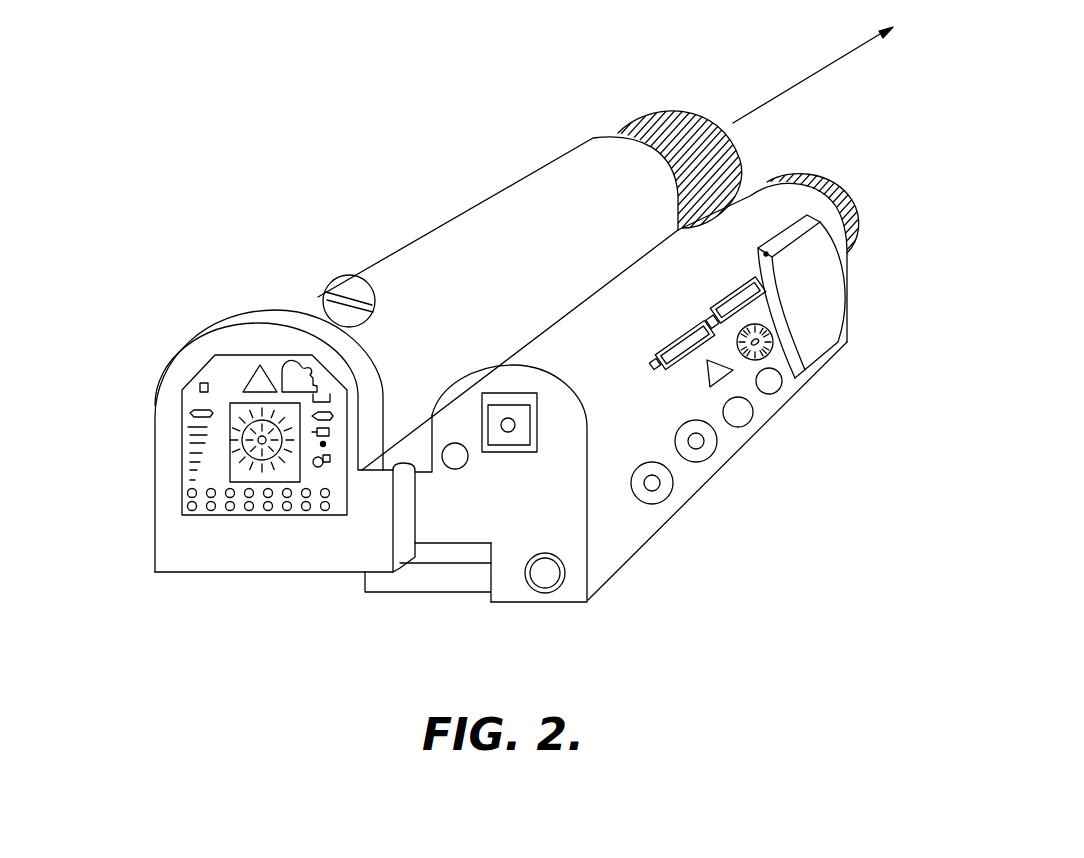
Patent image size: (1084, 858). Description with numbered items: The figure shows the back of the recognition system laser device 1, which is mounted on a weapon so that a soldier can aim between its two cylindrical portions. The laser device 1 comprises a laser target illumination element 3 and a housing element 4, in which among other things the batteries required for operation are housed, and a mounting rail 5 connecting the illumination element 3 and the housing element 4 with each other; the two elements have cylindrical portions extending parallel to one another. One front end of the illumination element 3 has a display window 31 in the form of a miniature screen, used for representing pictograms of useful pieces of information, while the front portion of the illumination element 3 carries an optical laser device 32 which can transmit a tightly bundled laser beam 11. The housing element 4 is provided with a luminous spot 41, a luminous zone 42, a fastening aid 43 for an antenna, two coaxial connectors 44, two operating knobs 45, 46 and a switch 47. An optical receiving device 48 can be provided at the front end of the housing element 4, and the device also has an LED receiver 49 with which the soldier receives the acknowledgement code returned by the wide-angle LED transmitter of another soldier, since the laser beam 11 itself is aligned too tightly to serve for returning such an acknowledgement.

The laser device 1 is at (404, 132).
The laser target illumination element 3 is at (330, 276).
The housing element 4 is at (631, 572).
The mounting rail 5 is at (383, 582).
The laser beam 11 is at (778, 95).
The display window 31 is at (228, 527).
The optical laser device 32 is at (654, 116).
The luminous spot 41 is at (456, 460).
The luminous zone 42 is at (508, 426).
The fastening aid 43 is at (545, 575).
The coaxial connectors 44 is at (697, 447).
The operating knob 45 is at (737, 415).
The operating knob 46 is at (768, 387).
The switch 47 is at (820, 313).
The optical receiving device 48 is at (862, 226).
The LED receiver 49 is at (828, 376).